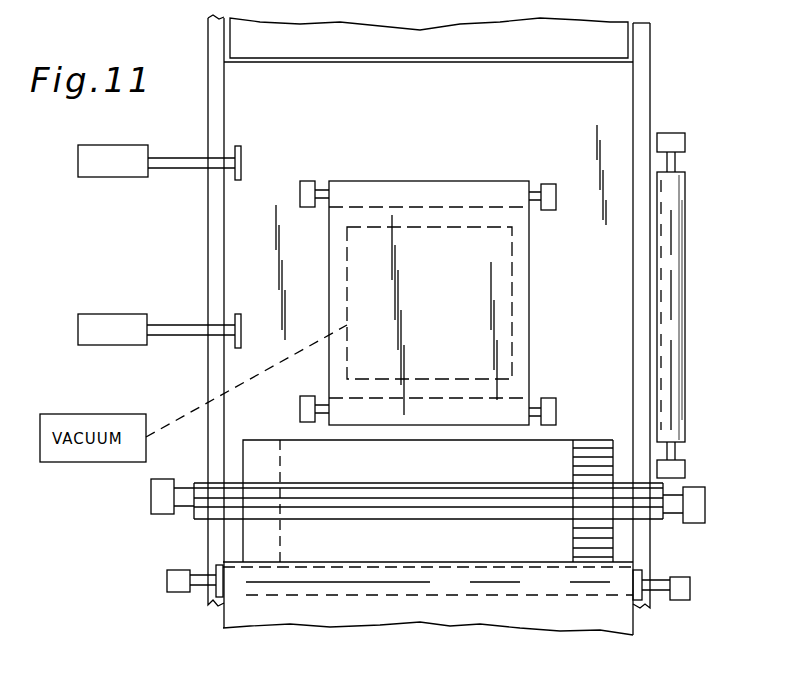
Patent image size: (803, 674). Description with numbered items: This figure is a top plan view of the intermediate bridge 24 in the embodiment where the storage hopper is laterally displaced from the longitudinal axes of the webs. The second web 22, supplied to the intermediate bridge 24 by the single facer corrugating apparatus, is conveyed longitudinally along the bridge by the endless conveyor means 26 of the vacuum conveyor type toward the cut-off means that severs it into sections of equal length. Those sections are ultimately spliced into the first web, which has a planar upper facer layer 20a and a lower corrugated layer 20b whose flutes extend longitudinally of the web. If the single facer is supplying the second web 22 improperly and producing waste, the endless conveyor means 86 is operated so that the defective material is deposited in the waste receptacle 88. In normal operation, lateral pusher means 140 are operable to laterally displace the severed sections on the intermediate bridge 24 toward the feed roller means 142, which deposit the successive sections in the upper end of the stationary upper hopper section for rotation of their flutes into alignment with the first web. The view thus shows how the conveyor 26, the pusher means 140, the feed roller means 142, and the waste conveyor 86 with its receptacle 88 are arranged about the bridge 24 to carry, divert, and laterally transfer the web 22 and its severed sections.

The intermediate bridge 24 is at (651, 108).
The waste receptacle 88 is at (450, 46).
The lateral pusher means 140 is at (108, 320).
The endless conveyor means 86 is at (530, 280).
The feed roller means 142 is at (696, 227).
The planar upper facer layer 20a is at (257, 447).
The lower corrugated layer 20b is at (591, 449).
The second web 22 is at (445, 554).
The endless conveyor means 26 is at (423, 610).